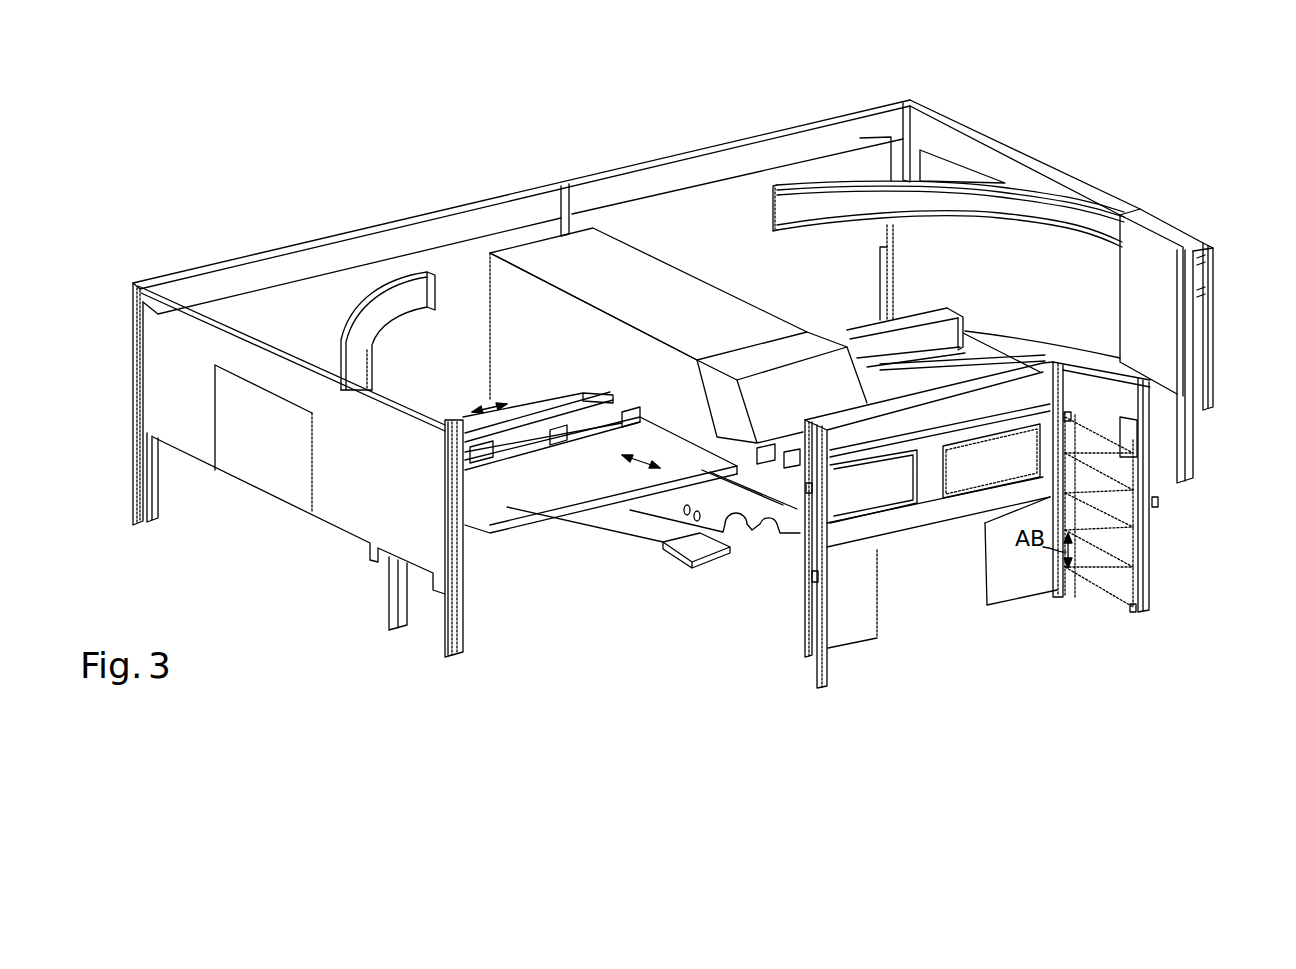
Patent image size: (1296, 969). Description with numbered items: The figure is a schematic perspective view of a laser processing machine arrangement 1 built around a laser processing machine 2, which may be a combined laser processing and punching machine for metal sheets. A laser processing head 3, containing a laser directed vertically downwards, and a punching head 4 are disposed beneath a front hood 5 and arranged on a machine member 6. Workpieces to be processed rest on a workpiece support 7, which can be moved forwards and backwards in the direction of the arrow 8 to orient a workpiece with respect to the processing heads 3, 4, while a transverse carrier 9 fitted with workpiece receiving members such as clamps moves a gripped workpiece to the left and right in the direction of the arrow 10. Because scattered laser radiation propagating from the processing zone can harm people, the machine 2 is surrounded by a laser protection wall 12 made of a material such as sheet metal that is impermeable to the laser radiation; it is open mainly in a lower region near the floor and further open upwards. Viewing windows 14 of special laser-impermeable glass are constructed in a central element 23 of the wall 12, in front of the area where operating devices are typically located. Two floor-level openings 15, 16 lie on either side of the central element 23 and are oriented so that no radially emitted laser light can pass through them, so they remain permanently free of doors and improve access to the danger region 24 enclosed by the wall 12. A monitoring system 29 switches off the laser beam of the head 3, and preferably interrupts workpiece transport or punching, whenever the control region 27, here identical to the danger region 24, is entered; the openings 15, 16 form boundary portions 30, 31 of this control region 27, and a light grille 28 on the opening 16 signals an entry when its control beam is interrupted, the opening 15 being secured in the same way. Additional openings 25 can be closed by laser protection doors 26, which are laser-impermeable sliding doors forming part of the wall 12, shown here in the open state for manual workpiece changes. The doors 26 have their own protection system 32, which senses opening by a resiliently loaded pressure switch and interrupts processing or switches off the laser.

The laser processing machine arrangement 1 is at (204, 233).
The laser processing machine 2 is at (614, 268).
The laser processing head 3 is at (764, 460).
The punching head 4 is at (793, 462).
The front hood 5 is at (830, 350).
The machine member 6 is at (667, 286).
The workpiece support 7 is at (517, 500).
The arrow 8 is at (641, 451).
The transverse carrier 9 is at (553, 415).
The arrow 10 is at (481, 396).
The laser protection wall 12 is at (338, 503).
The viewing windows 14 is at (965, 483).
The floor-level opening 15 is at (770, 567).
The floor-level opening 16 is at (1097, 526).
The central element 23 is at (1007, 600).
The danger region 24 is at (653, 519).
The additional openings 25 is at (598, 661).
The laser protection doors 26 is at (357, 362).
The control region 27 is at (636, 561).
The light grille 28 is at (1100, 548).
The monitoring system 29 is at (1138, 614).
The boundary portion 30 is at (804, 668).
The boundary portion 31 is at (1095, 600).
The protection system 32 is at (818, 578).